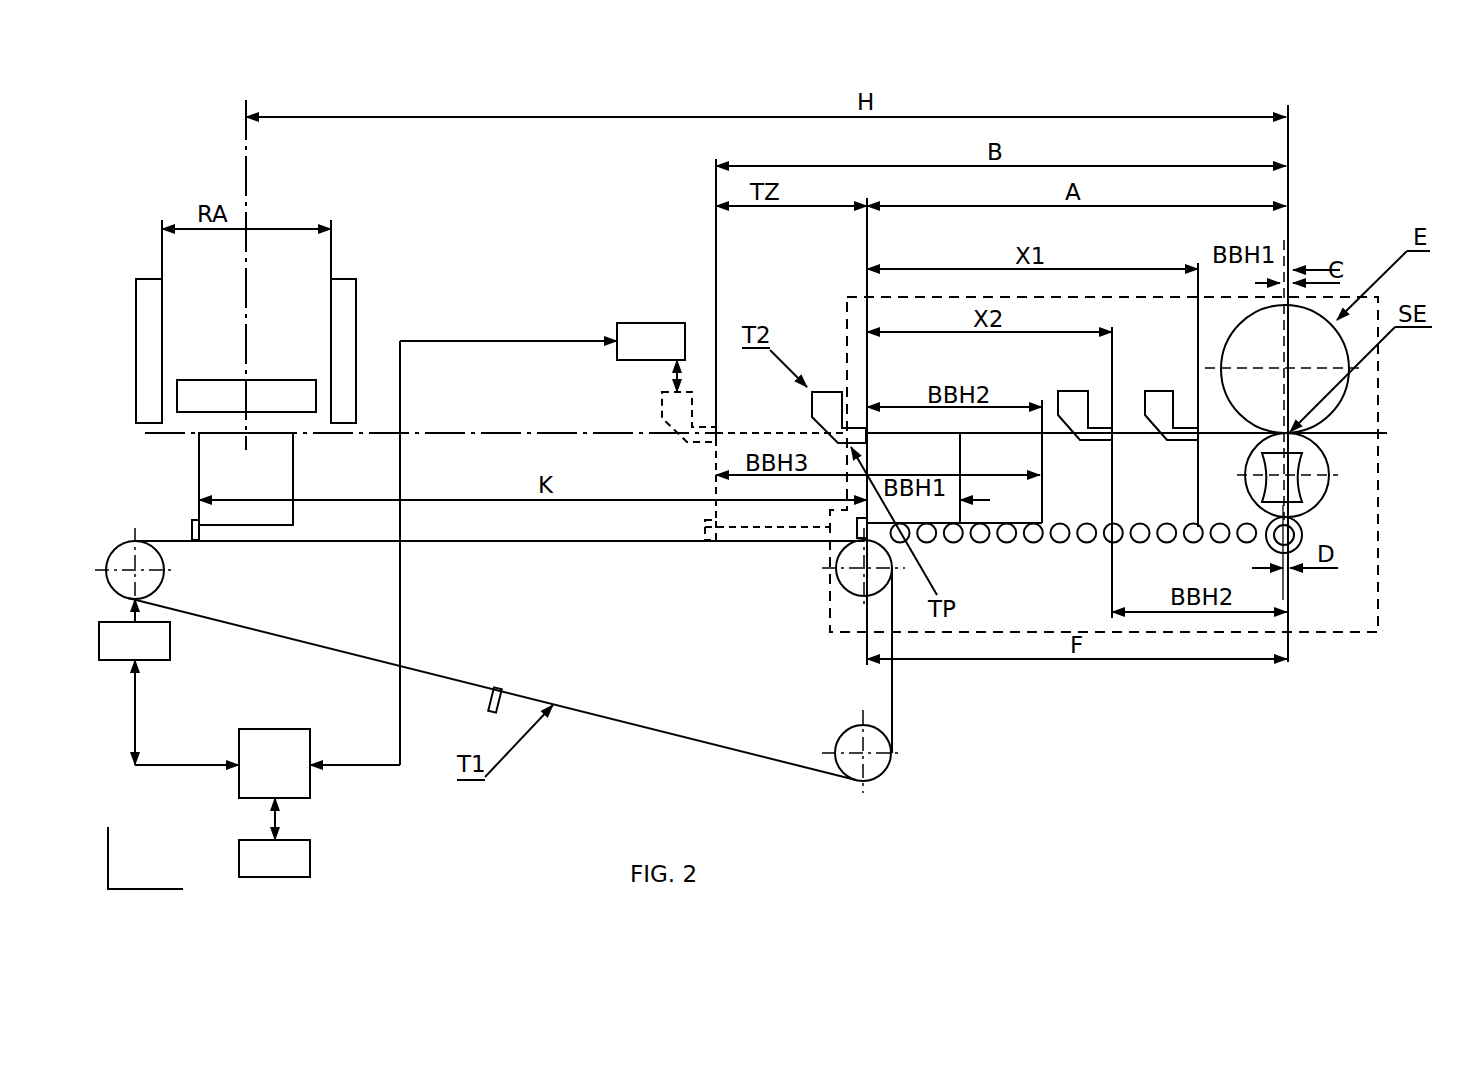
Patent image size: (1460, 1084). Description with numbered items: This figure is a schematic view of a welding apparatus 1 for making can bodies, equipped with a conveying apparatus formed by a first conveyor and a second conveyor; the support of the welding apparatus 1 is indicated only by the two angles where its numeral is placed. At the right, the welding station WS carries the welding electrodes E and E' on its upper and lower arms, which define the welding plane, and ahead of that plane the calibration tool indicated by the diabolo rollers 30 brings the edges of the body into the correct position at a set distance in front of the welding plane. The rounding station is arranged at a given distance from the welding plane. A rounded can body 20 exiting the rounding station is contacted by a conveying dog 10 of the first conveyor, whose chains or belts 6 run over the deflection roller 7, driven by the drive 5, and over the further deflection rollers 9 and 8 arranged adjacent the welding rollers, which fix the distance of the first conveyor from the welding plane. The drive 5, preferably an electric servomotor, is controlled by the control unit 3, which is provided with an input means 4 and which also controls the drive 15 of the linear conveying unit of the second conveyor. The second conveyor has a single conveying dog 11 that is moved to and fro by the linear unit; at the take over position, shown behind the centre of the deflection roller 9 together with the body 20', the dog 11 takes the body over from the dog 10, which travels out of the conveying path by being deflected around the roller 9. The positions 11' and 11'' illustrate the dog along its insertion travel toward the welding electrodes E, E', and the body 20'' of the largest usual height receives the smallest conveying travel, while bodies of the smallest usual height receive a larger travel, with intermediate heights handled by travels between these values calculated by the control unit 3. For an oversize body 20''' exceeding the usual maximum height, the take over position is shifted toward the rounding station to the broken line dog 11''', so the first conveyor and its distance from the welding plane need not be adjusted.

The welding apparatus 1 is at (152, 877).
The control unit 3 is at (263, 745).
The input means 4 is at (252, 855).
The drive 5 is at (155, 643).
The chains or belts 6 is at (217, 619).
The deflection roller 7 is at (152, 583).
The deflection roller 8 is at (850, 745).
The deflection roller 9 is at (851, 580).
The conveying dog 10 is at (192, 528).
The conveying dog 11 is at (809, 417).
The conveying dog 11' is at (1165, 393).
The conveying dog 11'' is at (1079, 393).
The conveying dog 11''' is at (683, 435).
The drive 15 is at (643, 330).
The can body 20 is at (246, 402).
The can body 20' is at (913, 407).
The can body 20'' is at (1029, 470).
The can body 20''' is at (776, 501).
The diabolo rollers 30 is at (1302, 529).
The welding electrode E is at (1285, 380).
The welding electrode E' is at (1301, 475).
The welding station WS is at (1325, 634).